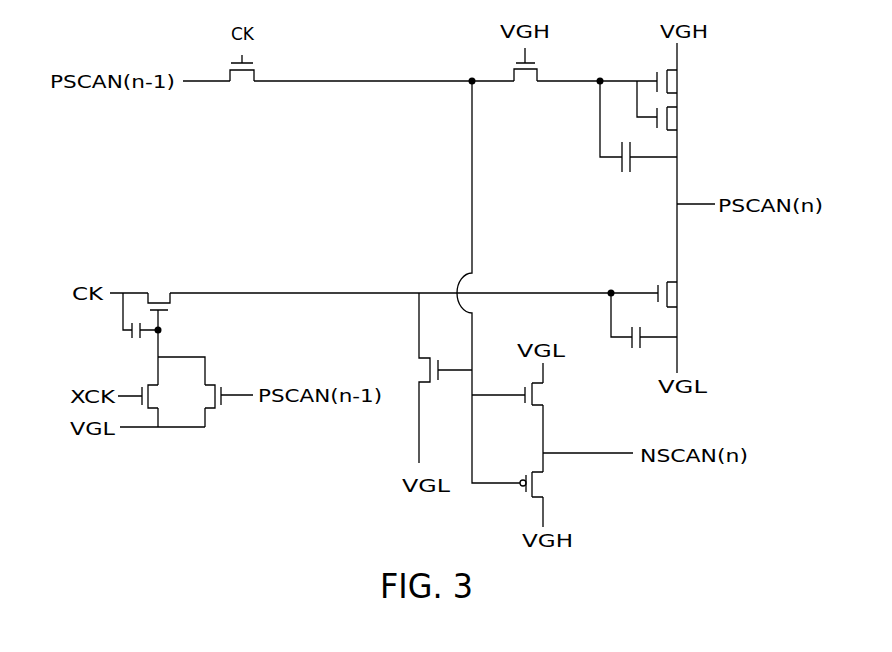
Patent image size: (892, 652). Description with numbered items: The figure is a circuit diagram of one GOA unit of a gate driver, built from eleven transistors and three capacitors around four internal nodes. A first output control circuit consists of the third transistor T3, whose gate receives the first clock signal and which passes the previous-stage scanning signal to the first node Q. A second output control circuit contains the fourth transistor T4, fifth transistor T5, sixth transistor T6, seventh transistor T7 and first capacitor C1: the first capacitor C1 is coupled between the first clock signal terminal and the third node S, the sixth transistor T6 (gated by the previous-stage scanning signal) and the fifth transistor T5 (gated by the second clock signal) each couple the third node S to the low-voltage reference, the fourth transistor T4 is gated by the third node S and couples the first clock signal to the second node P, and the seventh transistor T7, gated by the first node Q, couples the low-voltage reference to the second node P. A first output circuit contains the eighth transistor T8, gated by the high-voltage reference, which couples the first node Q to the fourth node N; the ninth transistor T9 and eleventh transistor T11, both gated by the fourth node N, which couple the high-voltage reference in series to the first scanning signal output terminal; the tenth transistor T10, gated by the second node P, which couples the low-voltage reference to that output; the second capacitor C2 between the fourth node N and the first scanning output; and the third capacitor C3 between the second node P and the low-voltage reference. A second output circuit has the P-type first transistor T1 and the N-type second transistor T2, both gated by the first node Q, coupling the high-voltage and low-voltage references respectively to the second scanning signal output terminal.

The first transistor T1 is at (546, 499).
The second transistor T2 is at (527, 385).
The third transistor T3 is at (242, 81).
The fourth transistor T4 is at (157, 314).
The fifth transistor T5 is at (145, 396).
The sixth transistor T6 is at (221, 396).
The seventh transistor T7 is at (437, 378).
The eighth transistor T8 is at (525, 77).
The ninth transistor T9 is at (682, 81).
The tenth transistor T10 is at (663, 294).
The eleventh transistor T11 is at (676, 105).
The first capacitor C1 is at (135, 327).
The second capacitor C2 is at (638, 140).
The third capacitor C3 is at (644, 332).
The first node Q is at (472, 71).
The fourth node N is at (600, 68).
The second node P is at (611, 283).
The third node S is at (167, 332).